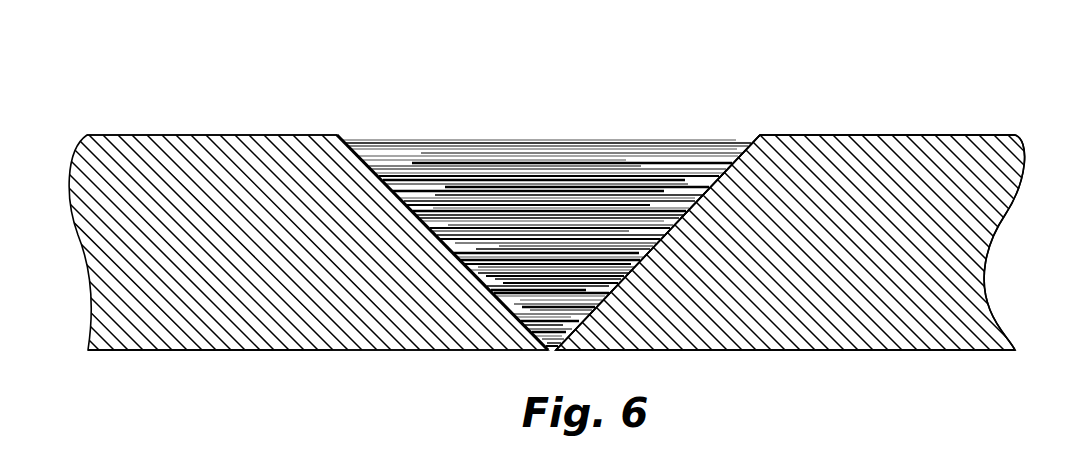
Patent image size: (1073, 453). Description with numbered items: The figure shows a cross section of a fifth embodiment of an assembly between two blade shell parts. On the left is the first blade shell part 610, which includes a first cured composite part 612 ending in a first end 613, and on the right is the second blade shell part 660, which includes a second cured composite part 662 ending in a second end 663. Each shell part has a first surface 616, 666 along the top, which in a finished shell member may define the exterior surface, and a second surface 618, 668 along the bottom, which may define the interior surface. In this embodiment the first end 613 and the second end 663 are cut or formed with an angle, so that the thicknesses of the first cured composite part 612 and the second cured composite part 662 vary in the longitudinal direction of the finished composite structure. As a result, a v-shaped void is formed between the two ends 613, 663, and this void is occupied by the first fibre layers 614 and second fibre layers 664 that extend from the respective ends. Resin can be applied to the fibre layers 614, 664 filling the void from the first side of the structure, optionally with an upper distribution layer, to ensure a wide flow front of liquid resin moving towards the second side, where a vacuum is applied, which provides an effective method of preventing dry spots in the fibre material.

The first blade shell part 610 is at (168, 114).
The first cured composite part 612 is at (194, 345).
The first end 613 is at (347, 136).
The first fibre layers 614 is at (424, 178).
The first surface 616 is at (305, 135).
The second surface 618 is at (304, 352).
The second blade shell part 660 is at (929, 90).
The second cured composite part 662 is at (830, 300).
The second end 663 is at (760, 135).
The second fibre layers 664 is at (707, 190).
The first surface 666 is at (1008, 135).
The second surface 668 is at (956, 350).